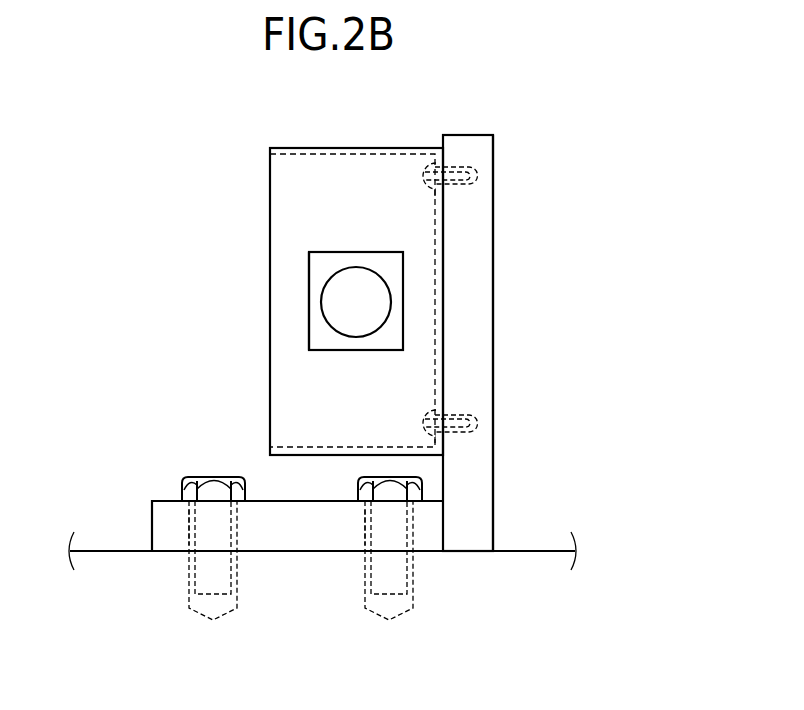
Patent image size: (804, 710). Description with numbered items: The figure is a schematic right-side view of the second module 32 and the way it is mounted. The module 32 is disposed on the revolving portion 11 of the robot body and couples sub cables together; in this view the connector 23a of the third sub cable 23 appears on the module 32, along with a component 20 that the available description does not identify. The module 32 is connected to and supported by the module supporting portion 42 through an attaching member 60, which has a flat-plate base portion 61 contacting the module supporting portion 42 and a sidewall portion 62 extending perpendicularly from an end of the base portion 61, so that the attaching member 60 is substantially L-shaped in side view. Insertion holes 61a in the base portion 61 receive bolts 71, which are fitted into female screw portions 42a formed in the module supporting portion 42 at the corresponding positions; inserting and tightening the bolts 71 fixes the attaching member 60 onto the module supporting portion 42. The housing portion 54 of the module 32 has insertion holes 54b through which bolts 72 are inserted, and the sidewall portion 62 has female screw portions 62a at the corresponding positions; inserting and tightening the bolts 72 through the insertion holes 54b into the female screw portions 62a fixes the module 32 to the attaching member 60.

The revolving portion 11 is at (551, 544).
The sensor unit 20 is at (318, 339).
The third sub cable 23 is at (321, 305).
The connector 23a is at (309, 262).
The second module 32 is at (365, 142).
The module supporting portion 42 is at (515, 551).
The female screw portions 42a is at (188, 600).
The housing portion 54 is at (321, 142).
The insertion holes 54b is at (443, 190).
The attaching member 60 is at (503, 183).
The base portion 61 is at (268, 542).
The insertion holes 61a is at (188, 528).
The sidewall portion 62 is at (493, 277).
The female screw portions 62a is at (461, 167).
The bolts 71 is at (186, 493).
The bolts 72 is at (437, 164).